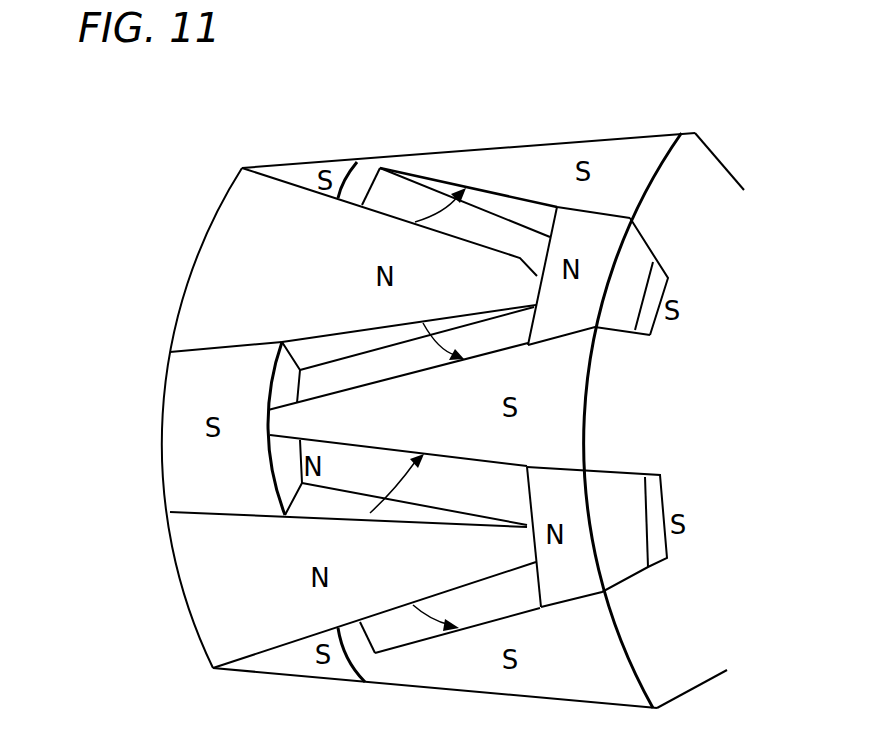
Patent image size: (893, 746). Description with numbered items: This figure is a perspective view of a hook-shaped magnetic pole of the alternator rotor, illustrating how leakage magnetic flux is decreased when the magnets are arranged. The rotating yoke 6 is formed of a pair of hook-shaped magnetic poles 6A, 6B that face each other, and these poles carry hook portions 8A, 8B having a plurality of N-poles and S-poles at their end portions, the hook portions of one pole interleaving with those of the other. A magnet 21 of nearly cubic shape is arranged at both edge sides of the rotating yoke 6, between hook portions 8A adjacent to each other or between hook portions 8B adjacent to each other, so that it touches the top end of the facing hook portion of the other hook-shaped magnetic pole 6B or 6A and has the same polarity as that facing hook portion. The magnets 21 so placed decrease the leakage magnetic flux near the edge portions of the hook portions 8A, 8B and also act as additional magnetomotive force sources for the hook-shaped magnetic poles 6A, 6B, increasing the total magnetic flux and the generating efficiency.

The rotating yoke 6 is at (606, 132).
The hook-shaped magnetic pole 6A is at (214, 612).
The hook-shaped magnetic pole 6B is at (687, 203).
The hook portion 8A is at (245, 197).
The hook portion 8B is at (448, 163).
The magnet 21 is at (633, 317).